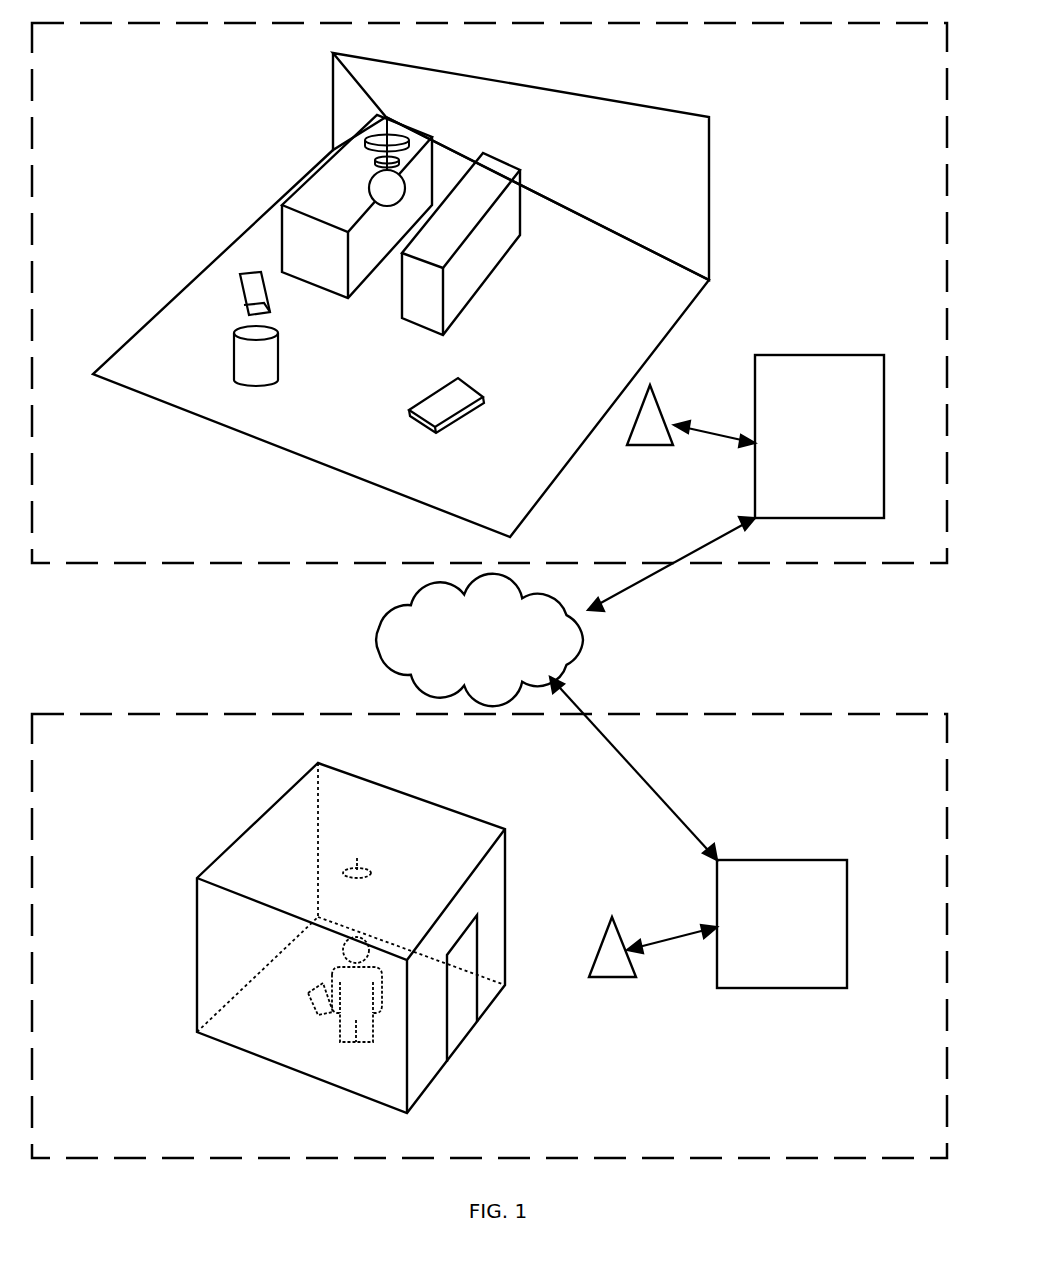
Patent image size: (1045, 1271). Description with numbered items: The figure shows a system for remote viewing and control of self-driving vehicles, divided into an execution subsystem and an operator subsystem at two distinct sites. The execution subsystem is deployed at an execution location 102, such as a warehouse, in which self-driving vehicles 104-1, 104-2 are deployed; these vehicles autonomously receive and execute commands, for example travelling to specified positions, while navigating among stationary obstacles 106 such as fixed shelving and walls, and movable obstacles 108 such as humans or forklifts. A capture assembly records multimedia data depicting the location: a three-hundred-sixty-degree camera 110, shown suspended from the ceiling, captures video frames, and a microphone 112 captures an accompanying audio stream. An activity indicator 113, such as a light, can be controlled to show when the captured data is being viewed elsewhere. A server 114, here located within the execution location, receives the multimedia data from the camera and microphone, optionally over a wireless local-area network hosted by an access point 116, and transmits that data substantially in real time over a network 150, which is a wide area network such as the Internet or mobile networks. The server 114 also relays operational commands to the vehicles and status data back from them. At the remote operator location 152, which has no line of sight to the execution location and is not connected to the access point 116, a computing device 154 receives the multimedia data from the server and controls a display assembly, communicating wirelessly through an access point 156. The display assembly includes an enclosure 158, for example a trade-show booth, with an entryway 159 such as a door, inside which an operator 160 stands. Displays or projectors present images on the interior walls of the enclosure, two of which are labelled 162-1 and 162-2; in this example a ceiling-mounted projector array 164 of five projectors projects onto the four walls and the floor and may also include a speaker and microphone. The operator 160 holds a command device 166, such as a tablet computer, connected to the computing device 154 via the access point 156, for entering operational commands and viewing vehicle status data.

The execution location 102 is at (40, 150).
The self-driving vehicle 104-1 is at (483, 393).
The self-driving vehicle 104-2 is at (237, 282).
The stationary obstacles 106 is at (420, 133).
The movable obstacles 108 is at (279, 352).
The 360-degree camera 110 is at (369, 190).
The microphone 112 is at (366, 142).
The activity indicator 113 is at (376, 162).
The server 114 is at (819, 436).
The access point 116 is at (653, 384).
The network 150 is at (479, 640).
The operator location 152 is at (42, 818).
The computing device 154 is at (782, 924).
The access point 156 is at (612, 916).
The enclosure 158 is at (228, 850).
The entryway 159 is at (478, 988).
The operator 160 is at (348, 1045).
The interior wall 162-1 is at (272, 874).
The interior wall 162-2 is at (427, 853).
The projector array 164 is at (345, 868).
The command device 166 is at (317, 1005).